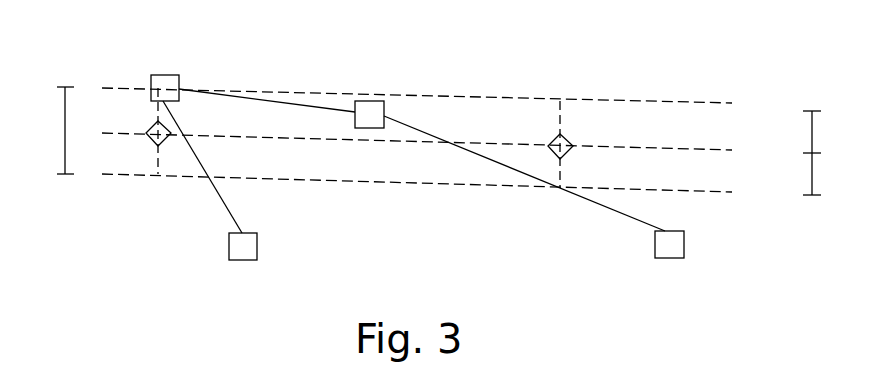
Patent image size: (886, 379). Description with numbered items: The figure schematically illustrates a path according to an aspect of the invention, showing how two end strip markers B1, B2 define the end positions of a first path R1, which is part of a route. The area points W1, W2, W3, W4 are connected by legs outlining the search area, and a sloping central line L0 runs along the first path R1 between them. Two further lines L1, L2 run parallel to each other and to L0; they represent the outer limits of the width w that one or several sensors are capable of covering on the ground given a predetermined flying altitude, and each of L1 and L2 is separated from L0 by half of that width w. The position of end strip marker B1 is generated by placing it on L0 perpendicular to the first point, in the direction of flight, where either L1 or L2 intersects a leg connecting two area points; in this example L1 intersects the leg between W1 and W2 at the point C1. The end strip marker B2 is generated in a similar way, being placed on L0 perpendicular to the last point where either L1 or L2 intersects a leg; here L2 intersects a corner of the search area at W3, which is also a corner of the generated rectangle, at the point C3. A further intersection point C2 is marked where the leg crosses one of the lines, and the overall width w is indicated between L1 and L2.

The area point W1 is at (684, 245).
The area point W2 is at (358, 100).
The area point W3 is at (178, 74).
The area point W4 is at (257, 240).
The end strip marker B1 is at (573, 147).
The end strip marker B2 is at (158, 148).
The intersection point C1 is at (552, 192).
The intersection point C2 is at (466, 136).
The intersection point C3 is at (136, 87).
The first path R1 is at (510, 136).
The center line L0 is at (437, 149).
The outer limit line L1 is at (439, 190).
The outer limit line L2 is at (435, 102).
The width w is at (57, 130).